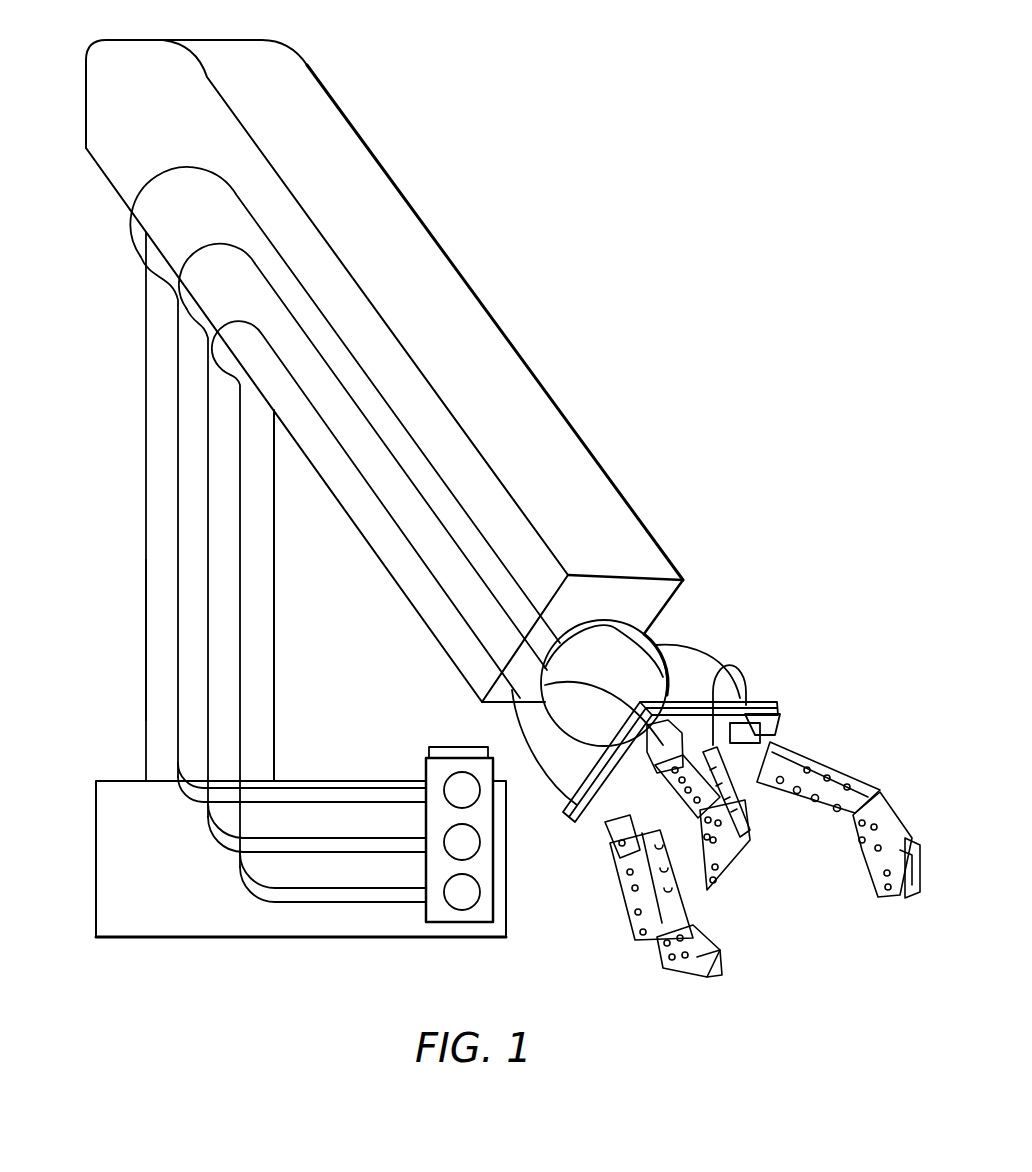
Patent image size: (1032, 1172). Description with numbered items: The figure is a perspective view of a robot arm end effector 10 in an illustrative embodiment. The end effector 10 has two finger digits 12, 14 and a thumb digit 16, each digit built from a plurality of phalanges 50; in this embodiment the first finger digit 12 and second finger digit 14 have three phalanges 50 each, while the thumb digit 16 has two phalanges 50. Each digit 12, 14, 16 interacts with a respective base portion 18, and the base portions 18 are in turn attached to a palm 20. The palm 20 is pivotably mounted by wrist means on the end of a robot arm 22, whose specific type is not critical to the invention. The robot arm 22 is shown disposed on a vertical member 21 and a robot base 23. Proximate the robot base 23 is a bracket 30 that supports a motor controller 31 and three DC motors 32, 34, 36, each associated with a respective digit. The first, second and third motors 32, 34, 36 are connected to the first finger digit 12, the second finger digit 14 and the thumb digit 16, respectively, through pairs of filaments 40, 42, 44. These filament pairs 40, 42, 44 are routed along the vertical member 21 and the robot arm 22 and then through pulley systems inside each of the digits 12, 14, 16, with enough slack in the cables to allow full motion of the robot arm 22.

The robot arm end effector 10 is at (878, 770).
The first finger digit 12 is at (893, 893).
The second finger digit 14 is at (725, 892).
The thumb digit 16 is at (707, 978).
The base portion 18 is at (727, 690).
The palm 20 is at (630, 763).
The vertical member 21 is at (155, 632).
The robot arm 22 is at (367, 535).
The robot base 23 is at (170, 925).
The bracket 30 is at (443, 915).
The motor controller 31 is at (448, 750).
The first motor 32 is at (472, 793).
The second motor 34 is at (473, 843).
The third motor 36 is at (472, 893).
The pair of filaments 40 is at (177, 511).
The pair of filaments 42 is at (207, 574).
The pair of filaments 44 is at (242, 627).
The phalanges 50 is at (870, 870).